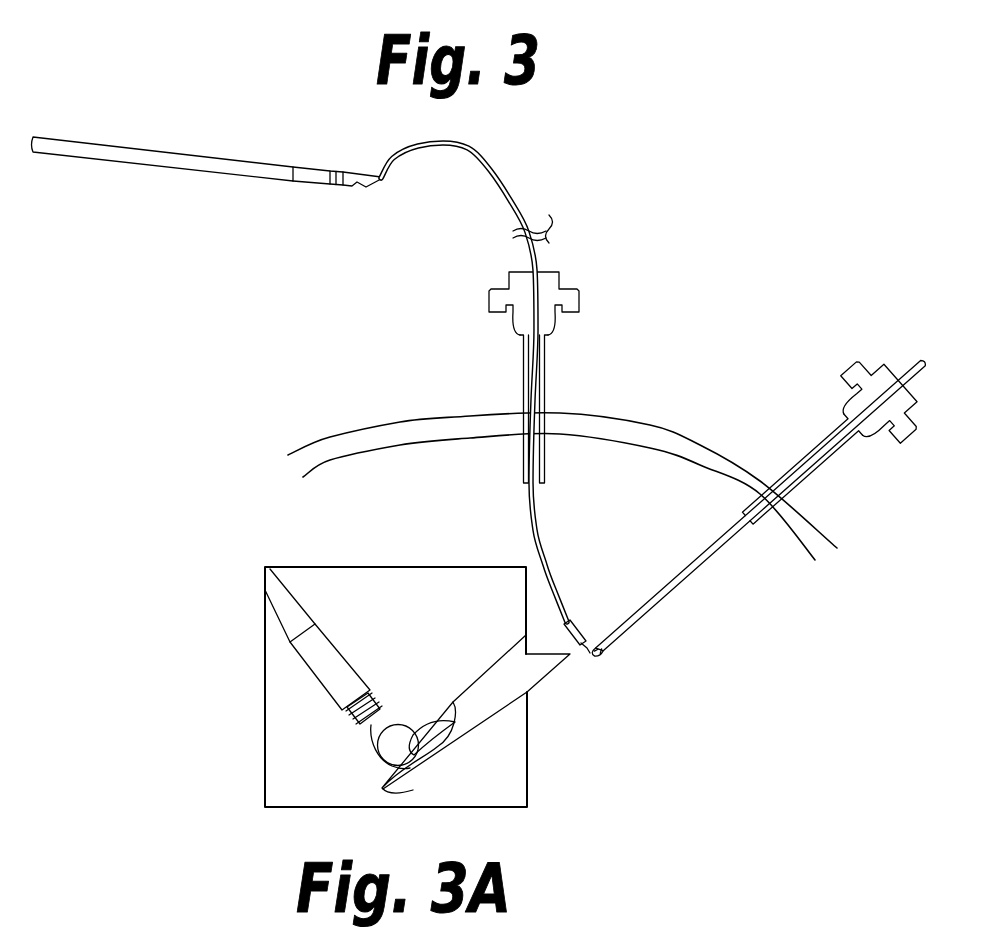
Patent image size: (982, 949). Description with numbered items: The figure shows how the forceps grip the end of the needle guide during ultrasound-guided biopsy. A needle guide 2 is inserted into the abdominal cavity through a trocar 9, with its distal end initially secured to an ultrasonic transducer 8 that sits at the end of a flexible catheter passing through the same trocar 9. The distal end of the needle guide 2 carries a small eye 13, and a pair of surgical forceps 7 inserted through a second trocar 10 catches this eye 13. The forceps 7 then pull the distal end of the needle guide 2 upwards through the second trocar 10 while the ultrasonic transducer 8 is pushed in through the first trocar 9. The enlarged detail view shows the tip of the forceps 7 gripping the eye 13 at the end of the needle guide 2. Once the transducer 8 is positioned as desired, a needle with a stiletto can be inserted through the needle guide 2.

In FIG. 3, the needle guide 2 is at (547, 562).
In FIG. 3, the surgical forceps 7 is at (680, 587).
In FIG. 3, the ultrasonic transducer 8 is at (363, 188).
In FIG. 3, the trocar 9 is at (548, 368).
In FIG. 3, the second trocar 10 is at (823, 466).
In FIG. 3A, the ball 13 is at (402, 724).